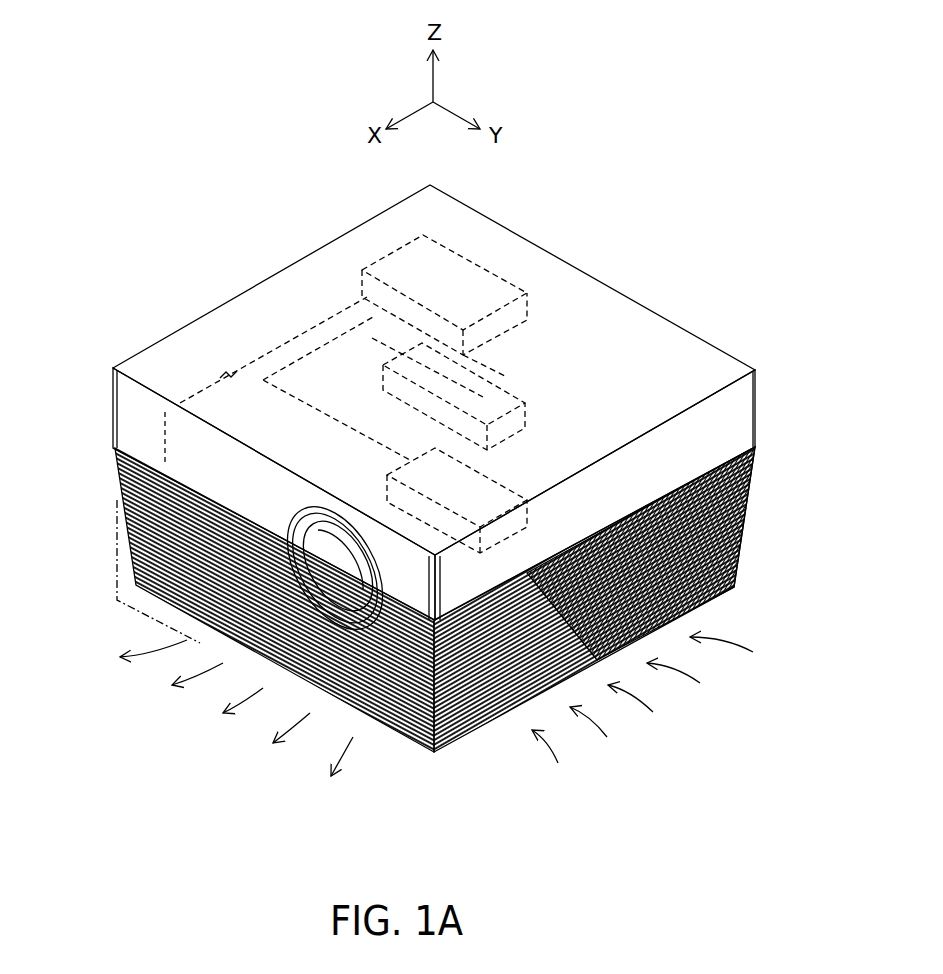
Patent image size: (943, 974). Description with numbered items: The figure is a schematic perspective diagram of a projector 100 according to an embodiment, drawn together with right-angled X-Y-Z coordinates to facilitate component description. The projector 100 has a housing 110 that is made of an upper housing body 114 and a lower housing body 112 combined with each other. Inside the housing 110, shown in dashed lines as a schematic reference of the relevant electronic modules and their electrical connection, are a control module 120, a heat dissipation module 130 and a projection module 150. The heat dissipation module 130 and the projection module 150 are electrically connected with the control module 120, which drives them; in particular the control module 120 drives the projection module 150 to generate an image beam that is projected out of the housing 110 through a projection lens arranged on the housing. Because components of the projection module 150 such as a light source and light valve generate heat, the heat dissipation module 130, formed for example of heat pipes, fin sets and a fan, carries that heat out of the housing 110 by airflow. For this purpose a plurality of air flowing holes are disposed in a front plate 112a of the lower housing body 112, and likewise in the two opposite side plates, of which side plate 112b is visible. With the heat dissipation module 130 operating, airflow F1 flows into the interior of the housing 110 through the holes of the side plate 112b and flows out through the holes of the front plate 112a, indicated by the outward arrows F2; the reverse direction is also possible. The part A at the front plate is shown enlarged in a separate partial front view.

The projector 100 is at (383, 516).
The housing 110 is at (383, 518).
The lower housing body 112 is at (409, 649).
The front plate 112a is at (405, 745).
The side plate 112b is at (513, 710).
The upper housing body 114 is at (128, 412).
The control module 120 is at (480, 262).
The heat dissipation module 130 is at (490, 363).
The projection module 150 is at (530, 448).
The part A is at (122, 603).
The airflow F1 is at (642, 700).
The outlet airflow F2 is at (236, 708).